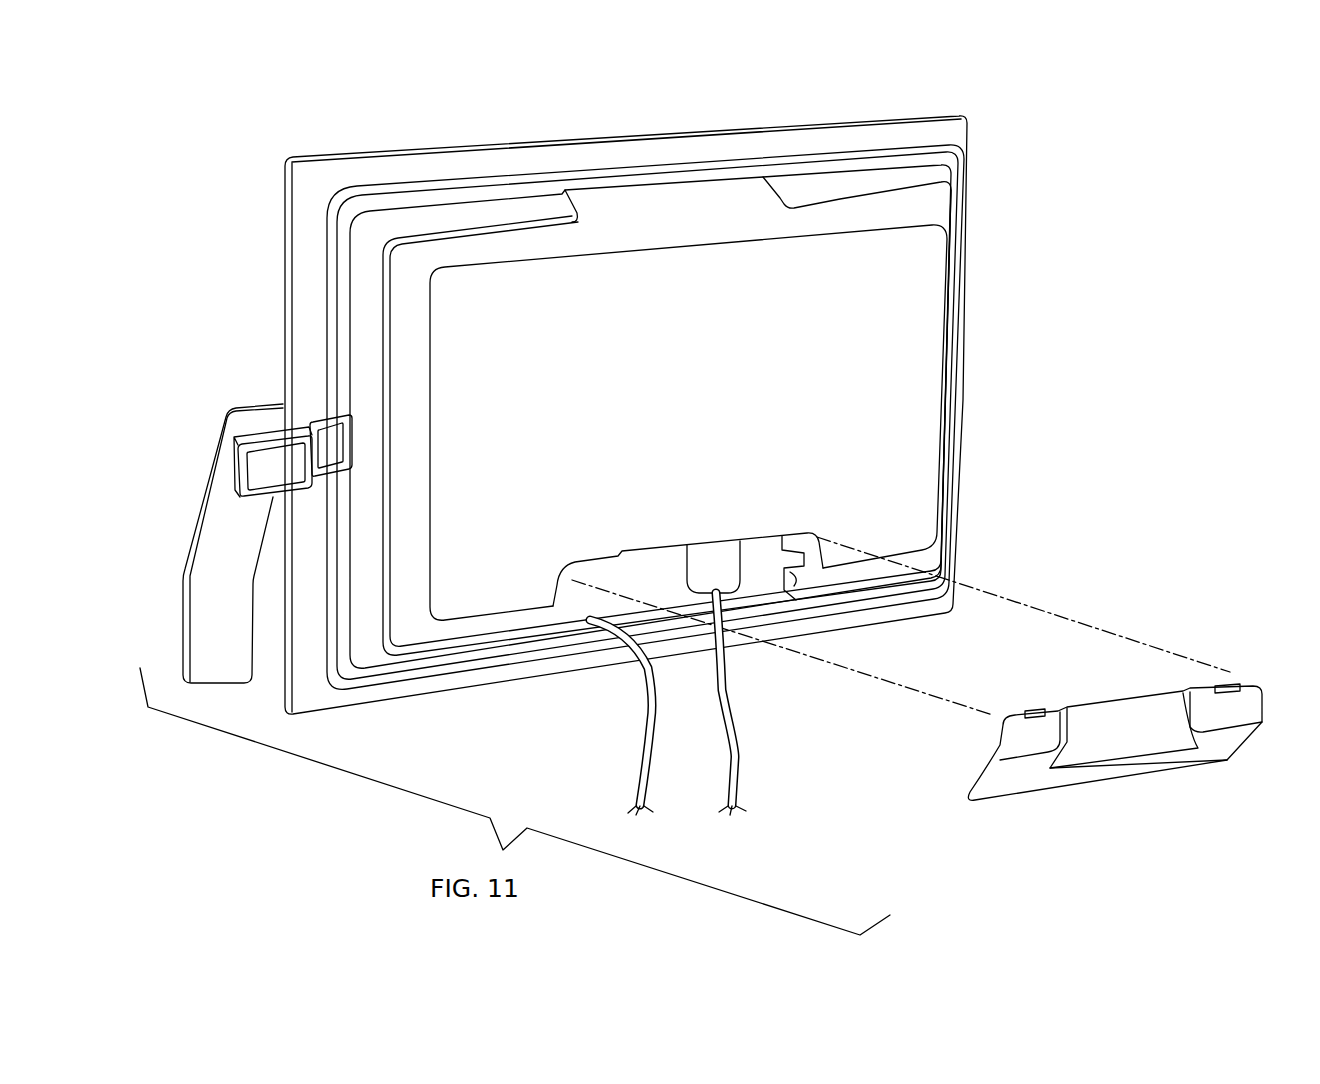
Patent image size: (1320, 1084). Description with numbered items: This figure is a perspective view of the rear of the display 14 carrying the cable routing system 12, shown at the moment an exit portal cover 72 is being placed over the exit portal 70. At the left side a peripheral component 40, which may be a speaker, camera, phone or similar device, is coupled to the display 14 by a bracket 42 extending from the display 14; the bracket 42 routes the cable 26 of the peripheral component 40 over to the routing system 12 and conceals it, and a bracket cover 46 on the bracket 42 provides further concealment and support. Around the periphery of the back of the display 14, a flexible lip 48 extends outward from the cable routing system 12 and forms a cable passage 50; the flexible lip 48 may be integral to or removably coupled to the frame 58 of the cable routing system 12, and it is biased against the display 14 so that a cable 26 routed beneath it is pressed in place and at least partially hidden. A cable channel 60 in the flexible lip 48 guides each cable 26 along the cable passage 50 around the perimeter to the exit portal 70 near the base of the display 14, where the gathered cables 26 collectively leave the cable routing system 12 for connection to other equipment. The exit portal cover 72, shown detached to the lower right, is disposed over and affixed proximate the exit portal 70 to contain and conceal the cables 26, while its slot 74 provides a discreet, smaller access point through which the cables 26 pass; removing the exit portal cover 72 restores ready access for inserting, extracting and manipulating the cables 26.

The display 14 is at (323, 118).
The cable routing system 12 is at (988, 437).
The cable passage 50 is at (370, 497).
The flexible lip 48 is at (368, 590).
The frame 58 is at (913, 295).
The exit portal 70 is at (588, 568).
The cable channel 60 is at (812, 580).
The cable 26 is at (654, 698).
The peripheral component 40 is at (218, 548).
The bracket 42 is at (272, 445).
The bracket cover 46 is at (285, 473).
The exit portal cover 72 is at (1135, 713).
The slot 74 is at (1132, 793).